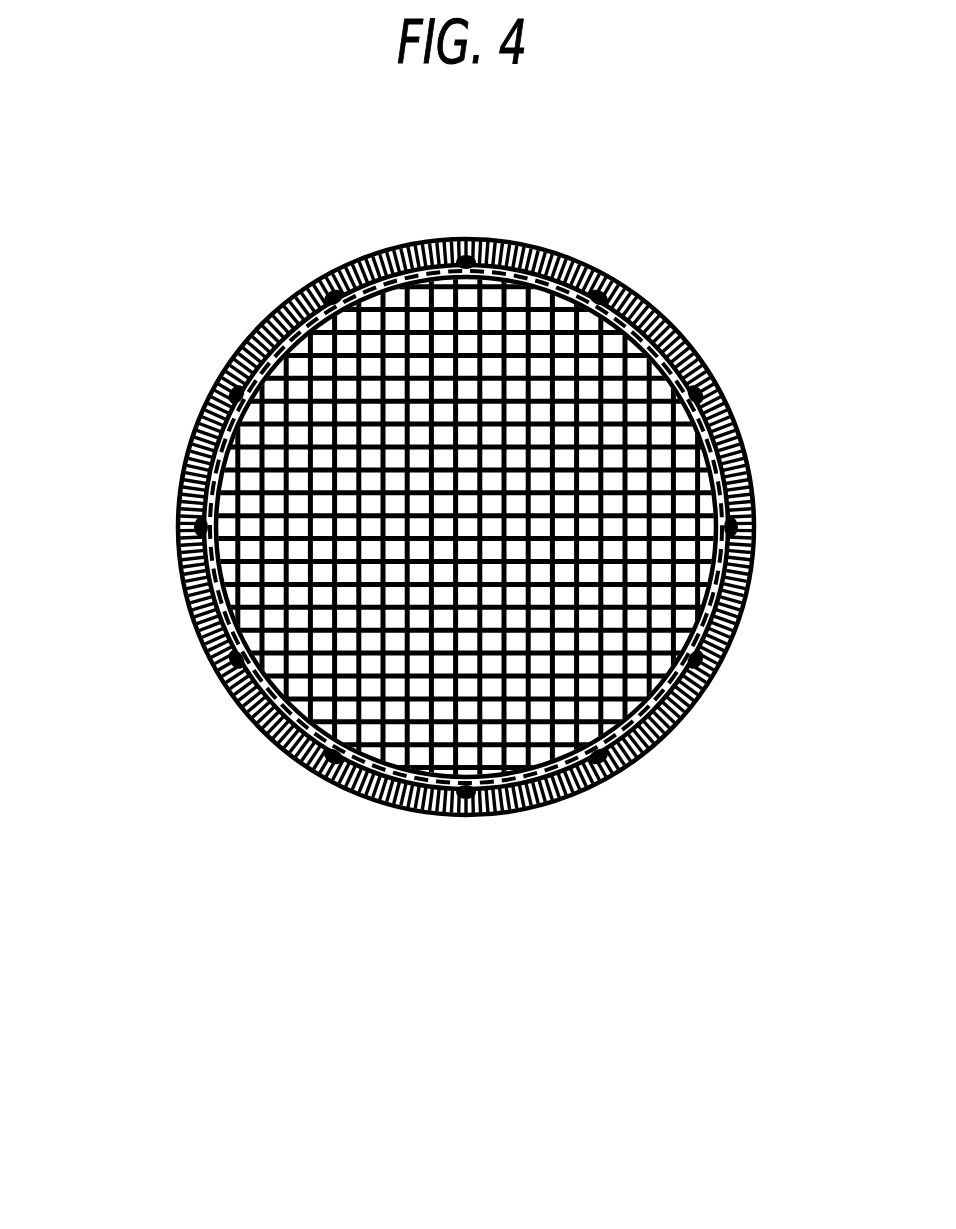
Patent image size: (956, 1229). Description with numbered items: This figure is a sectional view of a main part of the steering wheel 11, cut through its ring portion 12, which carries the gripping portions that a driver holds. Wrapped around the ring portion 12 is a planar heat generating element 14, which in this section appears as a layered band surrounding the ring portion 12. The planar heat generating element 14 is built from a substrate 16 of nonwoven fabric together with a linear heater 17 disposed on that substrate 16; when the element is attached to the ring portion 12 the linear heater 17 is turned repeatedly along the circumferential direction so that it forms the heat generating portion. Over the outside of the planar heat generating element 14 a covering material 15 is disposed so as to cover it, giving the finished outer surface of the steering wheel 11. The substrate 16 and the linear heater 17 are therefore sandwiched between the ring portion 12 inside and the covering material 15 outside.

The steering wheel 11 is at (655, 305).
The ring portion 12 is at (597, 670).
The planar heat generating element 14 is at (258, 988).
The covering material 15 is at (468, 815).
The substrate 16 is at (237, 706).
The linear heater 17 is at (307, 767).